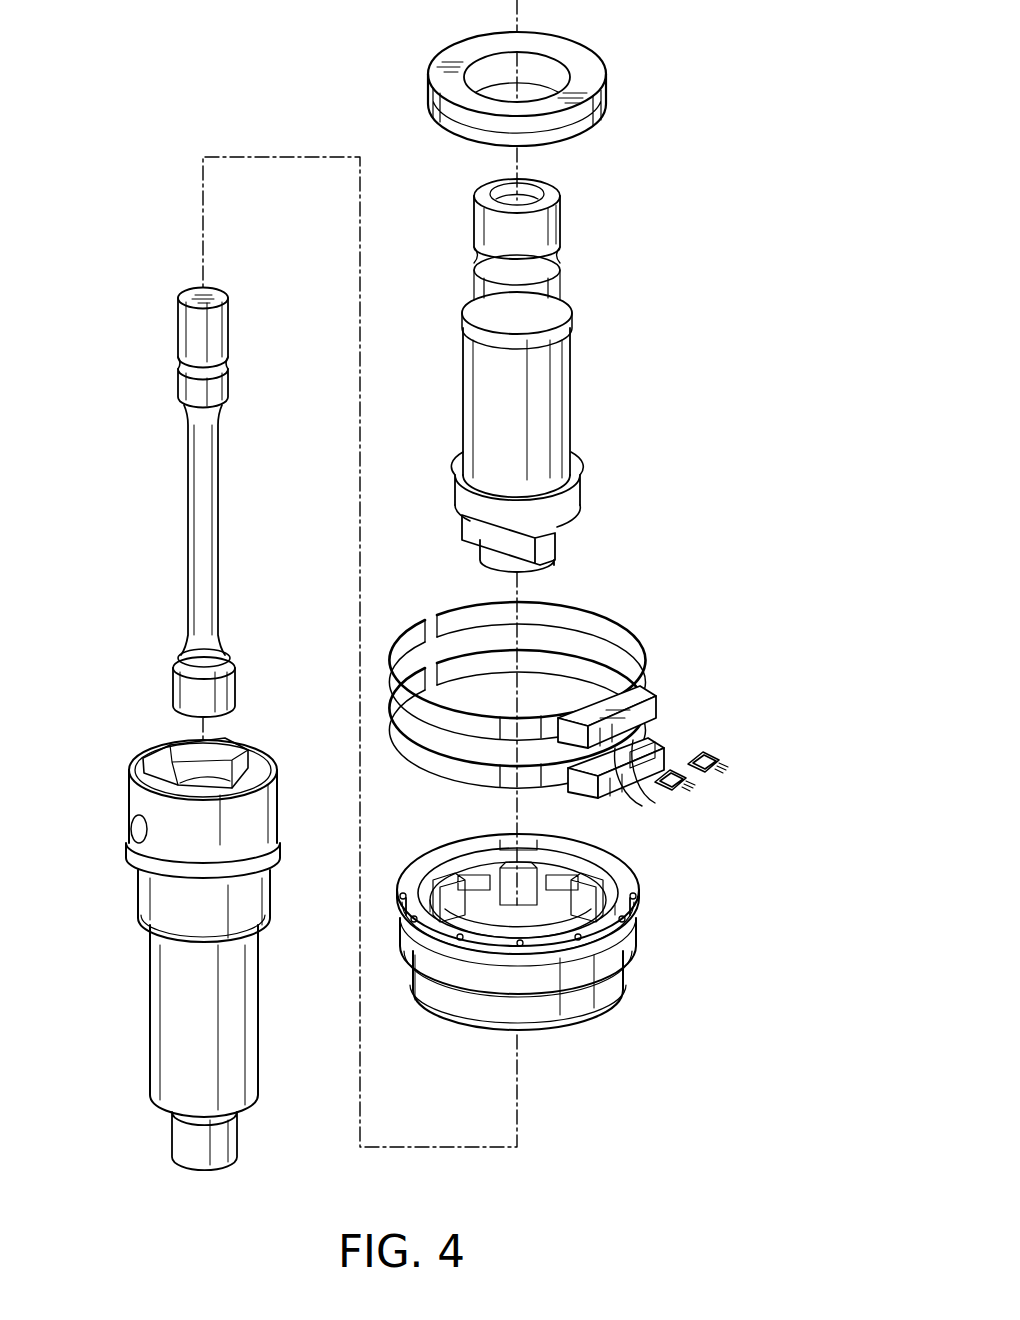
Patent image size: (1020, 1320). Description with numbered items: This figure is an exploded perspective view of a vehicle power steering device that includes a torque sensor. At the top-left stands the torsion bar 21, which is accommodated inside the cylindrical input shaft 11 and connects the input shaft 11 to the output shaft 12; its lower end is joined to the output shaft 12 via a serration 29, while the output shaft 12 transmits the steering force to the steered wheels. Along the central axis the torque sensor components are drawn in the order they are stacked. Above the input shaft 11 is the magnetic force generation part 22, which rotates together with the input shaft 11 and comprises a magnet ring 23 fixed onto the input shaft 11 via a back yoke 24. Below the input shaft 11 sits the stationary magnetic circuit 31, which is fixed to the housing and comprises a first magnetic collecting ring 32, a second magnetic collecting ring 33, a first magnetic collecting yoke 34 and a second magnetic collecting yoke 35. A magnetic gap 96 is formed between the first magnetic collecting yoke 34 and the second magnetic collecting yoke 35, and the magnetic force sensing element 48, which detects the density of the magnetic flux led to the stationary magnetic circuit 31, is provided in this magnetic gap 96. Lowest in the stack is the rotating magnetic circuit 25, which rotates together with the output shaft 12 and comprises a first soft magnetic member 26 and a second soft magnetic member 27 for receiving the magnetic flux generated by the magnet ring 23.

The input shaft 11 is at (570, 360).
The output shaft 12 is at (150, 972).
The torsion bar 21 is at (188, 506).
The magnetic force generation part 22 is at (601, 90).
The magnet ring 23 is at (570, 110).
The back yoke 24 is at (582, 80).
The rotating magnetic circuit 25 is at (608, 932).
The first soft magnetic member 26 is at (640, 897).
The second soft magnetic member 27 is at (753, 888).
The serration 29 is at (178, 695).
The stationary magnetic circuit 31 is at (615, 688).
The first magnetic collecting ring 32 is at (602, 612).
The second magnetic collecting ring 33 is at (610, 645).
The first magnetic collecting yoke 34 is at (650, 705).
The second magnetic collecting yoke 35 is at (669, 768).
The magnetic force sensing element 48 is at (712, 778).
The magnetic gap 96 is at (635, 790).